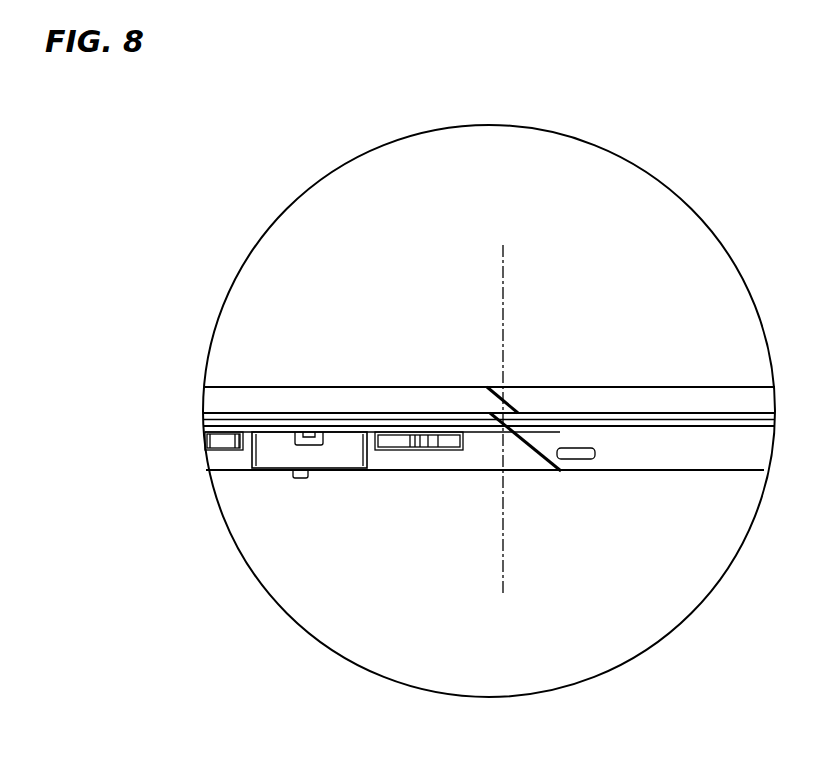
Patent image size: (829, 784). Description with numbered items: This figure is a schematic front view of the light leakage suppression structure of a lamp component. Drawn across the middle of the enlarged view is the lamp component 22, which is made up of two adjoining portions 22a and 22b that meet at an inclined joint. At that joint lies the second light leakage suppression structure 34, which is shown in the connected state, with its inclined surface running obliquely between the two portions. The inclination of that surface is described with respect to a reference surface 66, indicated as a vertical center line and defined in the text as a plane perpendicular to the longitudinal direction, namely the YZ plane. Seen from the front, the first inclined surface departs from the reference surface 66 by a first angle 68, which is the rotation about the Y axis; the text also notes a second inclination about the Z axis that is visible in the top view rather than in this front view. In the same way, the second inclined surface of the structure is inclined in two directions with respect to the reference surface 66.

The housing cover 22 is at (643, 272).
The first cover portion 22a is at (421, 384).
The second cover portion 22b is at (633, 385).
The second light leakage suppression structure 34 is at (560, 476).
The reference surface 66 is at (503, 560).
The first angle 68 is at (526, 449).